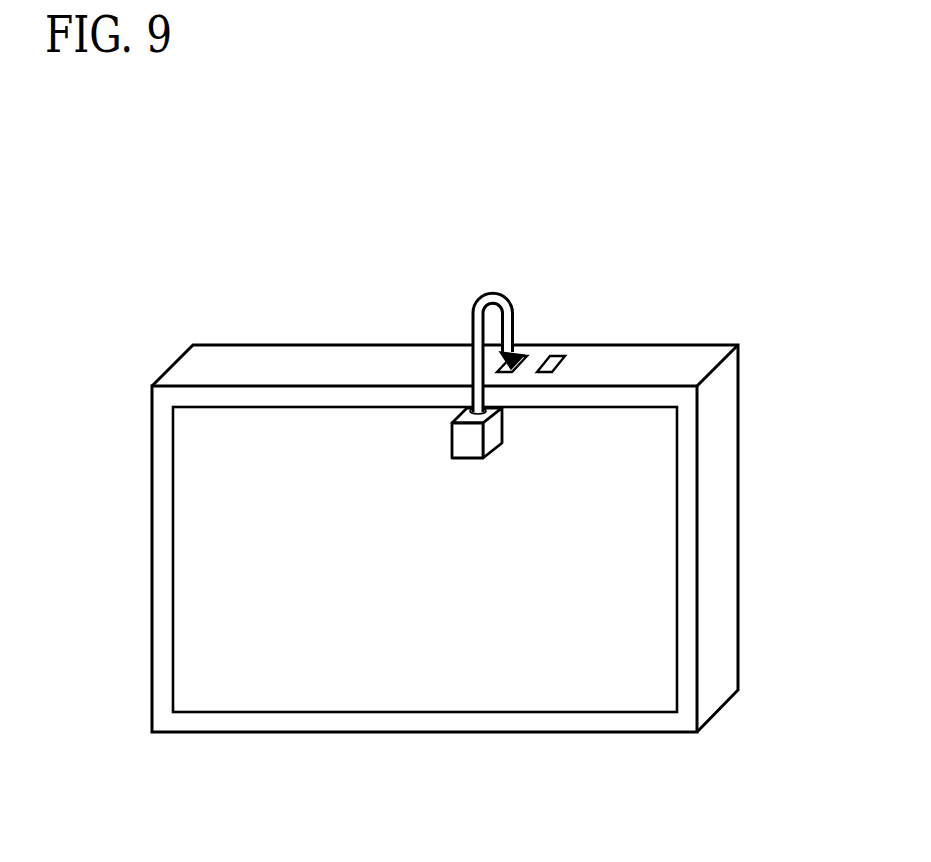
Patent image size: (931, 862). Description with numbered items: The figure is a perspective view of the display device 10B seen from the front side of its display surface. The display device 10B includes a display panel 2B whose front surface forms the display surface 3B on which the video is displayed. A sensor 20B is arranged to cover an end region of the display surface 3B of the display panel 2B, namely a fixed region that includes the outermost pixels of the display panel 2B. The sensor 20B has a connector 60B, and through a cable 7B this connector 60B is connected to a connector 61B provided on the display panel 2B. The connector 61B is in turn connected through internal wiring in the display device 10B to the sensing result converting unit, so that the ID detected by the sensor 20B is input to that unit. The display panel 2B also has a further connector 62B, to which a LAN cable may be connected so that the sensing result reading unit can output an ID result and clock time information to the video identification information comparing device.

The display device 10B is at (744, 229).
The display panel 2B is at (708, 357).
The display surface 3B is at (437, 564).
The cable 7B is at (472, 308).
The connector 61B is at (522, 356).
The connector 62B is at (560, 356).
The connector 60B is at (485, 416).
The sensor 20B is at (493, 435).